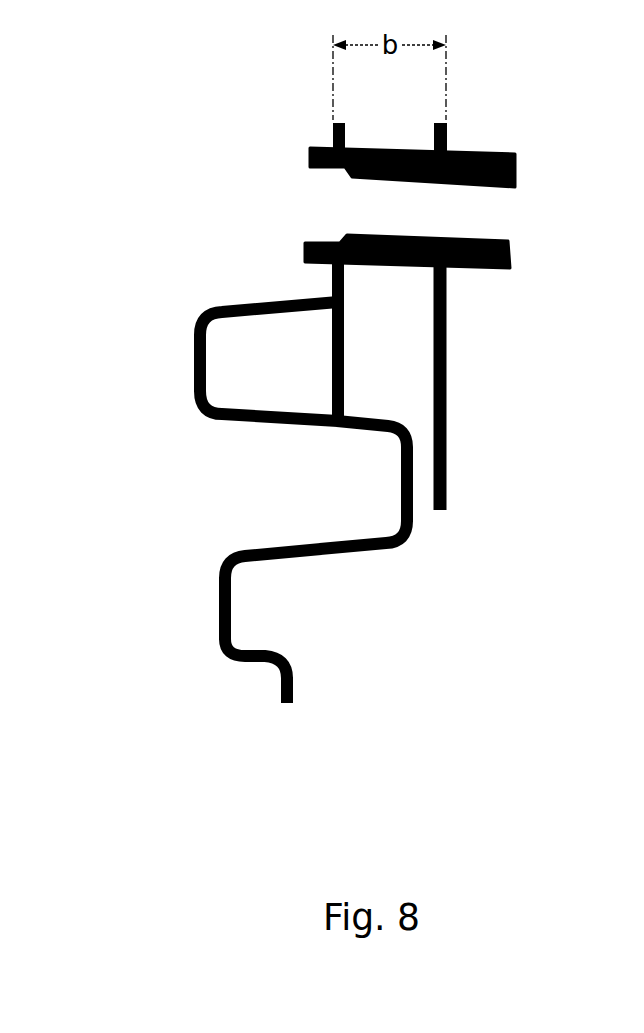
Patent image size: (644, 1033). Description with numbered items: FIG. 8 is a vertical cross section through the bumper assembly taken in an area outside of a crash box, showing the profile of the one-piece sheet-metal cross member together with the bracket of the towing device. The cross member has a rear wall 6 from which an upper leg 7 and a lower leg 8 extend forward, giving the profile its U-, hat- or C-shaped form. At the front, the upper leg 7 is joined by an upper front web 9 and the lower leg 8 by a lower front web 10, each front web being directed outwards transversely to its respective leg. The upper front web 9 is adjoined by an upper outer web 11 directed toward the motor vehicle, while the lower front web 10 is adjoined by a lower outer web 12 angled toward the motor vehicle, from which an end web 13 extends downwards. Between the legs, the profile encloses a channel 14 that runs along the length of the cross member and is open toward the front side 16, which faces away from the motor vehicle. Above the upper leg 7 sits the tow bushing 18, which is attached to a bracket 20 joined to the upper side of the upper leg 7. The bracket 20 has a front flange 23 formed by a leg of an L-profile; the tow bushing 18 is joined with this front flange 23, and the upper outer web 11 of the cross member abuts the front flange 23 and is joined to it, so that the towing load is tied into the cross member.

The rear wall 6 is at (418, 490).
The upper leg 7 is at (282, 425).
The lower leg 8 is at (294, 560).
The upper front web 9 is at (195, 360).
The lower front web 10 is at (217, 612).
The upper outer web 11 is at (245, 305).
The lower outer web 12 is at (243, 660).
The end web 13 is at (280, 690).
The channel 14 is at (325, 520).
The front side 16 is at (123, 520).
The tow bushing 18 is at (484, 157).
The bracket 20 is at (452, 333).
The front flange 23 is at (330, 278).